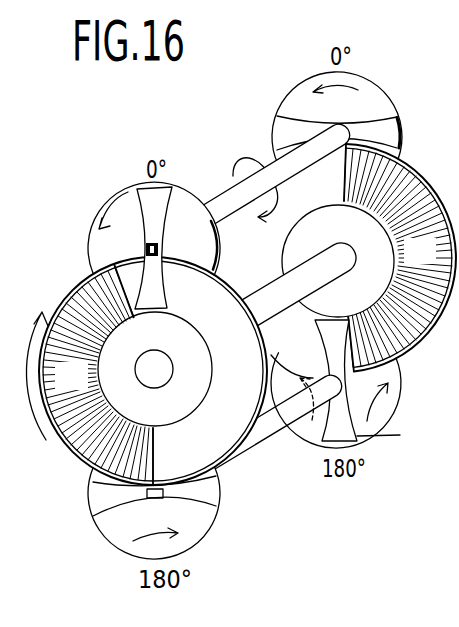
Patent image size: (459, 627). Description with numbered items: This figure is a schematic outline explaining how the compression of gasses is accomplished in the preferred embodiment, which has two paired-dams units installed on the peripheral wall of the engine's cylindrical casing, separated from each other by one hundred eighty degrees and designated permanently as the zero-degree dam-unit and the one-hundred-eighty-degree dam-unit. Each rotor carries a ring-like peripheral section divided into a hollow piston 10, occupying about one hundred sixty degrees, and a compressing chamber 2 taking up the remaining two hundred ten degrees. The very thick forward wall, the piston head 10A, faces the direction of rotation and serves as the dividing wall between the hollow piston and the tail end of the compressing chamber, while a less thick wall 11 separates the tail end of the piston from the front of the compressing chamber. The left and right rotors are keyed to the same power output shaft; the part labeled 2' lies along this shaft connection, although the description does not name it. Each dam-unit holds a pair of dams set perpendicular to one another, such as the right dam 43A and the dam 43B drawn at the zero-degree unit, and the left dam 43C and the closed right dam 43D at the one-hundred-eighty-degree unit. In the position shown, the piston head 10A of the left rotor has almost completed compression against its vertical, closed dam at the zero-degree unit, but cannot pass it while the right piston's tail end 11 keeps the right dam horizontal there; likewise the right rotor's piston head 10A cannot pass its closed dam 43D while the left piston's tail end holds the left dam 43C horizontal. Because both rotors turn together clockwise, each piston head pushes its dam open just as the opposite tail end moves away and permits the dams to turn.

The compressing chamber 2 is at (240, 314).
The shaft 2' is at (277, 296).
The hollow piston 10 is at (247, 314).
The piston head 10A is at (386, 358).
The tail end wall 11 is at (344, 195).
The right dam 43A is at (122, 190).
The spherical shell housing 43B is at (397, 122).
The left dam 43C is at (88, 499).
The closed right dam 43D is at (383, 432).